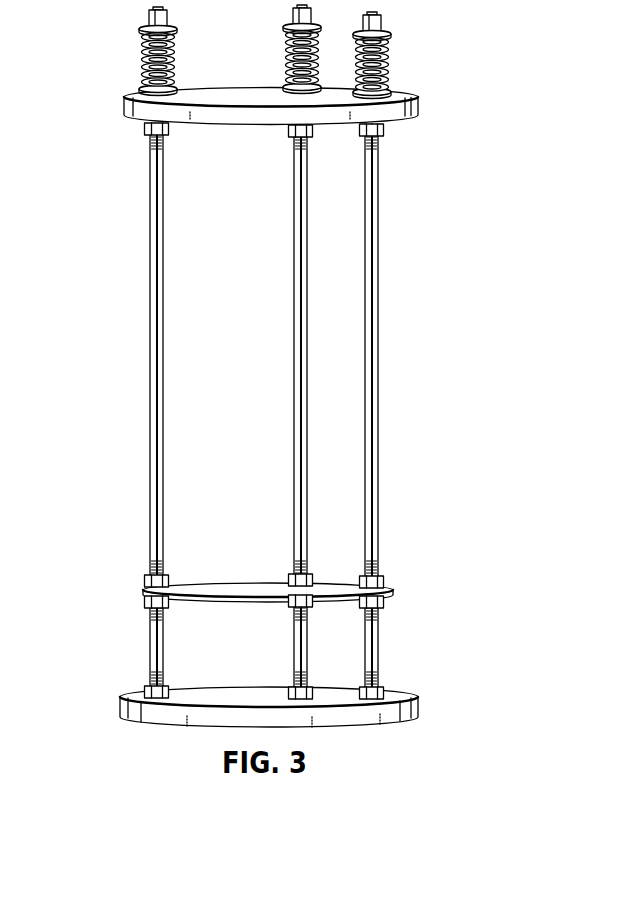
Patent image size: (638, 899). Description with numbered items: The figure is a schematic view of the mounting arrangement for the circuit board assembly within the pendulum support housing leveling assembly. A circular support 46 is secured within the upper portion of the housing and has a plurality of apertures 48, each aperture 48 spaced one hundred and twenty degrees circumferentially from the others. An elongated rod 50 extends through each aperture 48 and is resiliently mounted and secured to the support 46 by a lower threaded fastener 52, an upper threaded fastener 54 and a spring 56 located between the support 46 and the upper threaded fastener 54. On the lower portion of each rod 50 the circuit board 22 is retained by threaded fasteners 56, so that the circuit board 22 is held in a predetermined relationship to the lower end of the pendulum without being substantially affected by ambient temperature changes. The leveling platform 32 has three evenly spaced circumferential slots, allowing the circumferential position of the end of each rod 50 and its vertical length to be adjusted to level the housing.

The circuit board 22 is at (384, 594).
The leveling platform 32 is at (418, 705).
The circular support 46 is at (420, 107).
The aperture 48 is at (123, 98).
The elongated rod 50 is at (375, 356).
The lower threaded fastener 52 is at (382, 130).
The upper threaded fastener 54 is at (380, 30).
The spring 56 is at (389, 62).